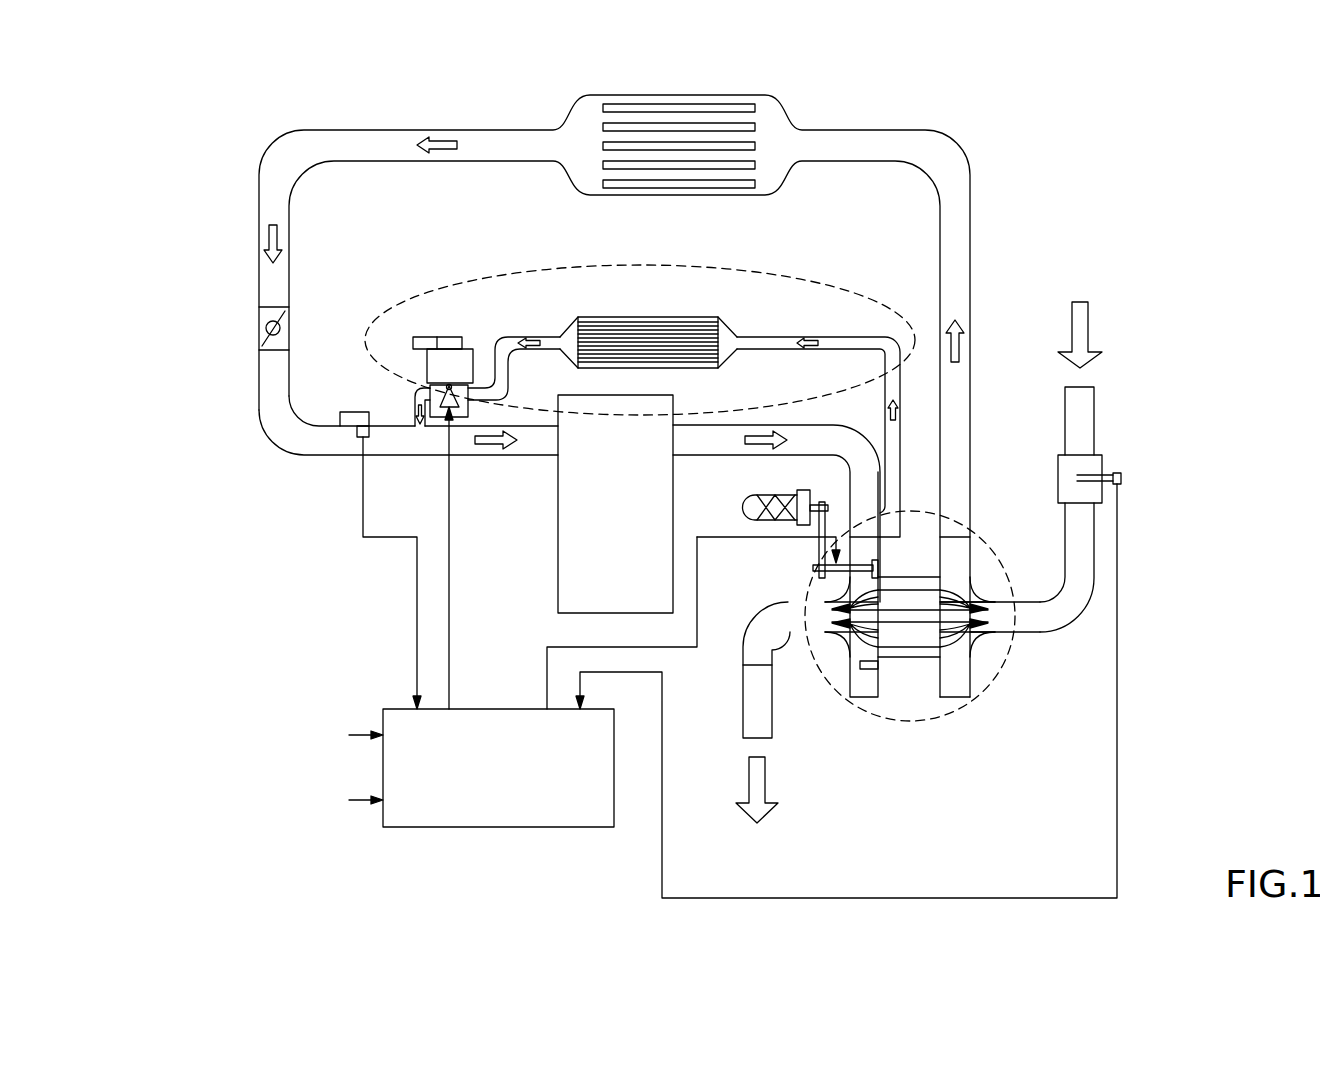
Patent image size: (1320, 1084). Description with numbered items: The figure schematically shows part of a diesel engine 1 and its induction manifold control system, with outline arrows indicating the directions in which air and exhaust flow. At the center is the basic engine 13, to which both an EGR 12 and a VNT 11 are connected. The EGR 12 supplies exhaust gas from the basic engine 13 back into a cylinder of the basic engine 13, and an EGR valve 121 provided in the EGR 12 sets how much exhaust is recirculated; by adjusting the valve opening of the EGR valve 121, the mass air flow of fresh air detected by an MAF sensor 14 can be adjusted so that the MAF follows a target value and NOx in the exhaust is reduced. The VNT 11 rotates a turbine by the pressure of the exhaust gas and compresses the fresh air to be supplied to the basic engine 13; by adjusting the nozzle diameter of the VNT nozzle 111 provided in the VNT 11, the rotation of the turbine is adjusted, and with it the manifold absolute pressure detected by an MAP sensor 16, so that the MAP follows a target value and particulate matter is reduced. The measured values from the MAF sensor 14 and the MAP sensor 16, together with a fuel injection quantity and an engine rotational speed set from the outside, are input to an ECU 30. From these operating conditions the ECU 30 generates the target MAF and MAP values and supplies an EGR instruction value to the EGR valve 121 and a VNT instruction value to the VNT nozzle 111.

The diesel engine 1 is at (1060, 106).
The VNT 11 is at (897, 721).
The VNT nozzle 111 is at (840, 570).
The EGR 12 is at (740, 266).
The EGR valve 121 is at (468, 365).
The basic engine 13 is at (558, 576).
The MAF sensor 14 is at (1121, 475).
The MAP sensor 16 is at (357, 431).
The ECU 30 is at (527, 827).